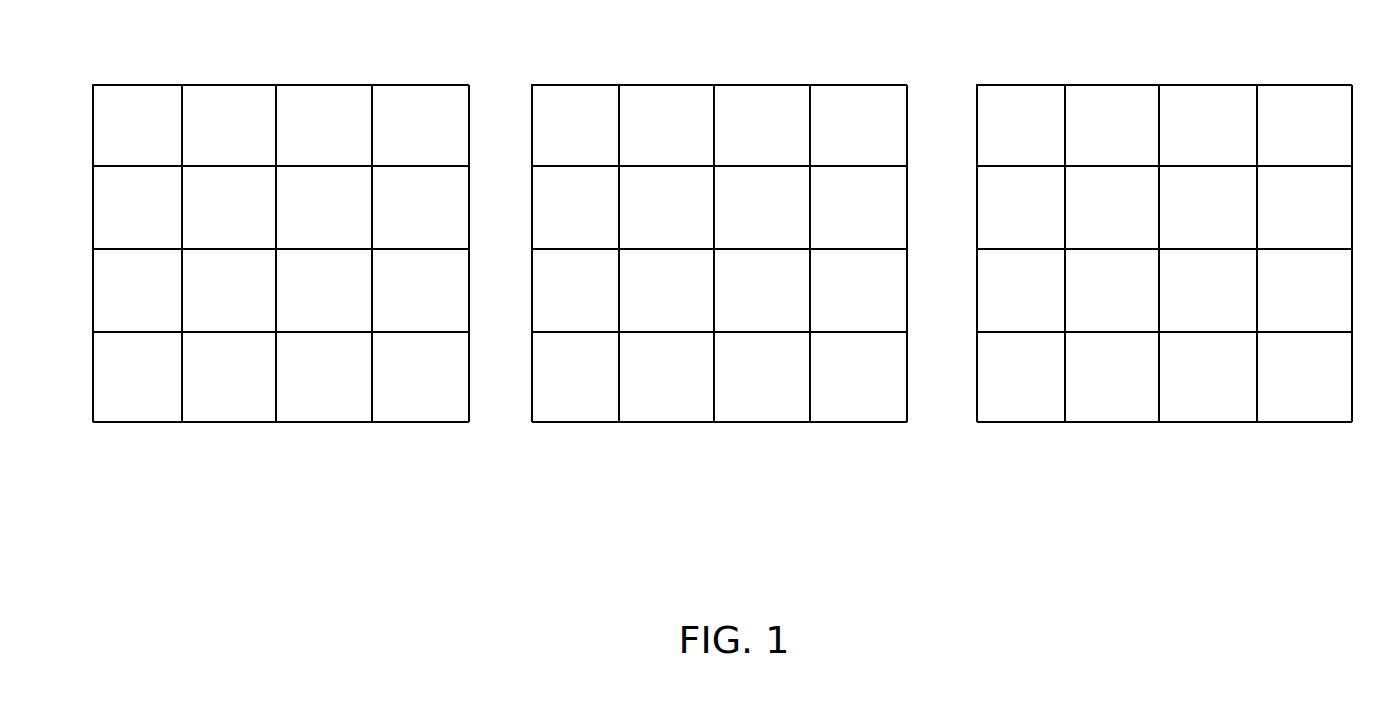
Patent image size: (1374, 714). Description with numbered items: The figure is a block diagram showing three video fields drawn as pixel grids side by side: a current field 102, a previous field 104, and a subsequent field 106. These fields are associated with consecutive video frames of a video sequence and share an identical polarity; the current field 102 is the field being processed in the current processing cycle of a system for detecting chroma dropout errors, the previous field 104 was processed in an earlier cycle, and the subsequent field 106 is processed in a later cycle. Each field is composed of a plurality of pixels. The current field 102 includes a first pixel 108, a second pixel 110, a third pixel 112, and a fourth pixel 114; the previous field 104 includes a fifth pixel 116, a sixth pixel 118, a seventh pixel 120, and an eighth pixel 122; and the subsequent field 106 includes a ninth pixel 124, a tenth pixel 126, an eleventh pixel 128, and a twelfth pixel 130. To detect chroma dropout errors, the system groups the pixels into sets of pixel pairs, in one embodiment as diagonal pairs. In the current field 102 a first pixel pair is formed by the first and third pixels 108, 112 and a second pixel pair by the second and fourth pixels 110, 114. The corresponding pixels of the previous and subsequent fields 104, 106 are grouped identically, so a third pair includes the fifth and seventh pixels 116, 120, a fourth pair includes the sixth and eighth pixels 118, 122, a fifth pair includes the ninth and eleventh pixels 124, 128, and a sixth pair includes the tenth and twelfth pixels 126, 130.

The current field 102 is at (280, 83).
The previous field 104 is at (747, 83).
The subsequent field 106 is at (1195, 83).
The first pixel 108 is at (116, 141).
The second pixel 110 is at (208, 141).
The third pixel 112 is at (208, 216).
The fourth pixel 114 is at (303, 216).
The fifth pixel 116 is at (554, 141).
The sixth pixel 118 is at (688, 141).
The seventh pixel 120 is at (688, 216).
The eighth pixel 122 is at (741, 216).
The ninth pixel 124 is at (1000, 141).
The tenth pixel 126 is at (1091, 141).
The eleventh pixel 128 is at (1091, 216).
The twelfth pixel 130 is at (1187, 216).